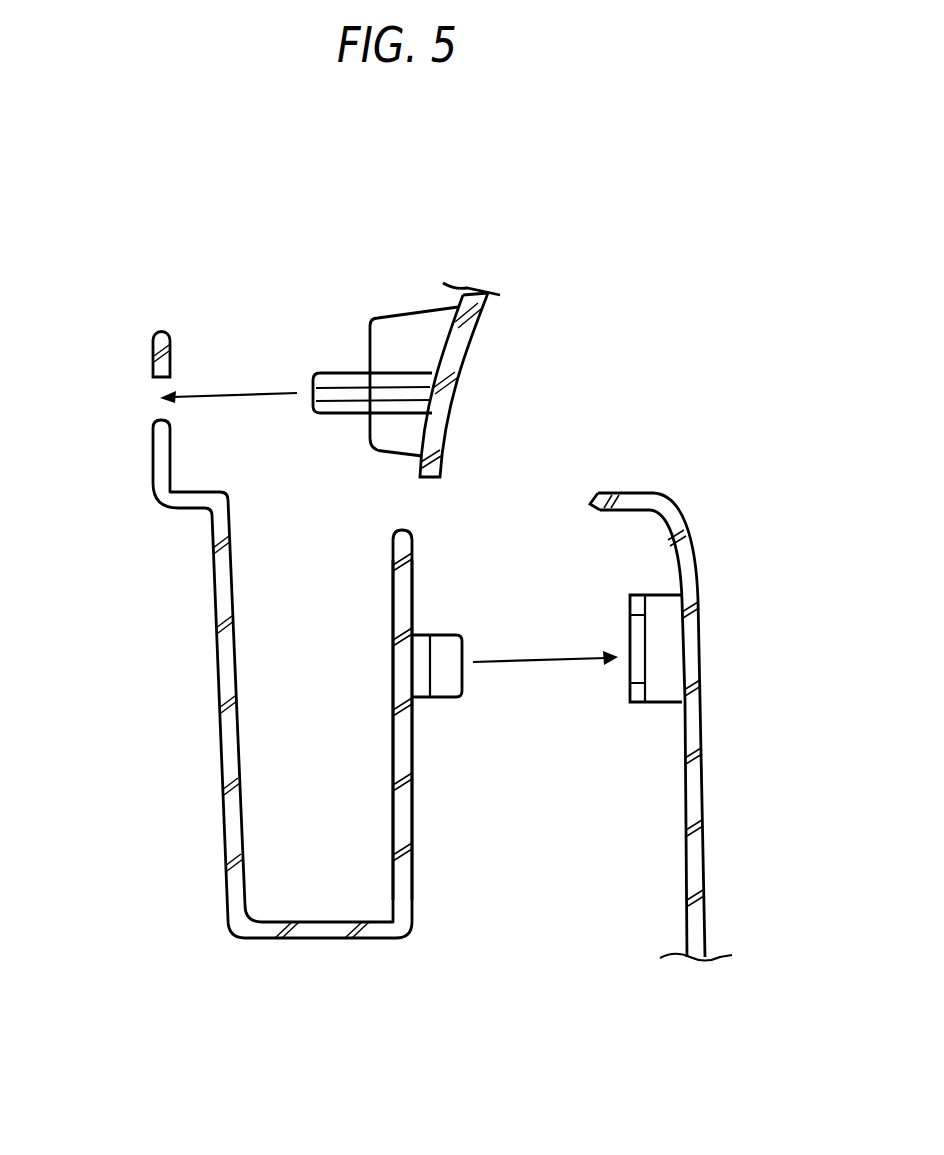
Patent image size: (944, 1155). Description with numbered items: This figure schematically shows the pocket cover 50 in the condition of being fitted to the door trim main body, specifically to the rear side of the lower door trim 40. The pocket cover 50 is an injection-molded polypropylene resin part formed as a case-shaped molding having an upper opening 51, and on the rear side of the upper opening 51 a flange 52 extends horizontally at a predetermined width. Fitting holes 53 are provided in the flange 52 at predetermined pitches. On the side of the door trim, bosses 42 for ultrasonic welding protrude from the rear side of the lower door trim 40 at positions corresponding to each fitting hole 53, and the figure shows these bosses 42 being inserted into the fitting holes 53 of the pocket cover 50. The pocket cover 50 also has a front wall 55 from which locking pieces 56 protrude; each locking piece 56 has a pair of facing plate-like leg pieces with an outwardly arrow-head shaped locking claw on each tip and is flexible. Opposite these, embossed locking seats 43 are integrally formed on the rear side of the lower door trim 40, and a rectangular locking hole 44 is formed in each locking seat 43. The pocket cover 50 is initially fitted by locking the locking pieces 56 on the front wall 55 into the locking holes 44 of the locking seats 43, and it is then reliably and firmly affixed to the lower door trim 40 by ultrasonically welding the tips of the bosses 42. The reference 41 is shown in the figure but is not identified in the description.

The lower door trim 40 is at (700, 775).
The curved wall of body 41 is at (540, 490).
The boss for ultrasonic welding 42 is at (352, 370).
The locking seat 43 is at (663, 617).
The locking hole 44 is at (635, 660).
The pocket cover 50 is at (215, 848).
The upper opening 51 is at (317, 522).
The flange 52 is at (155, 350).
The fitting hole 53 is at (158, 400).
The front wall 55 is at (412, 748).
The locking piece 56 is at (442, 648).